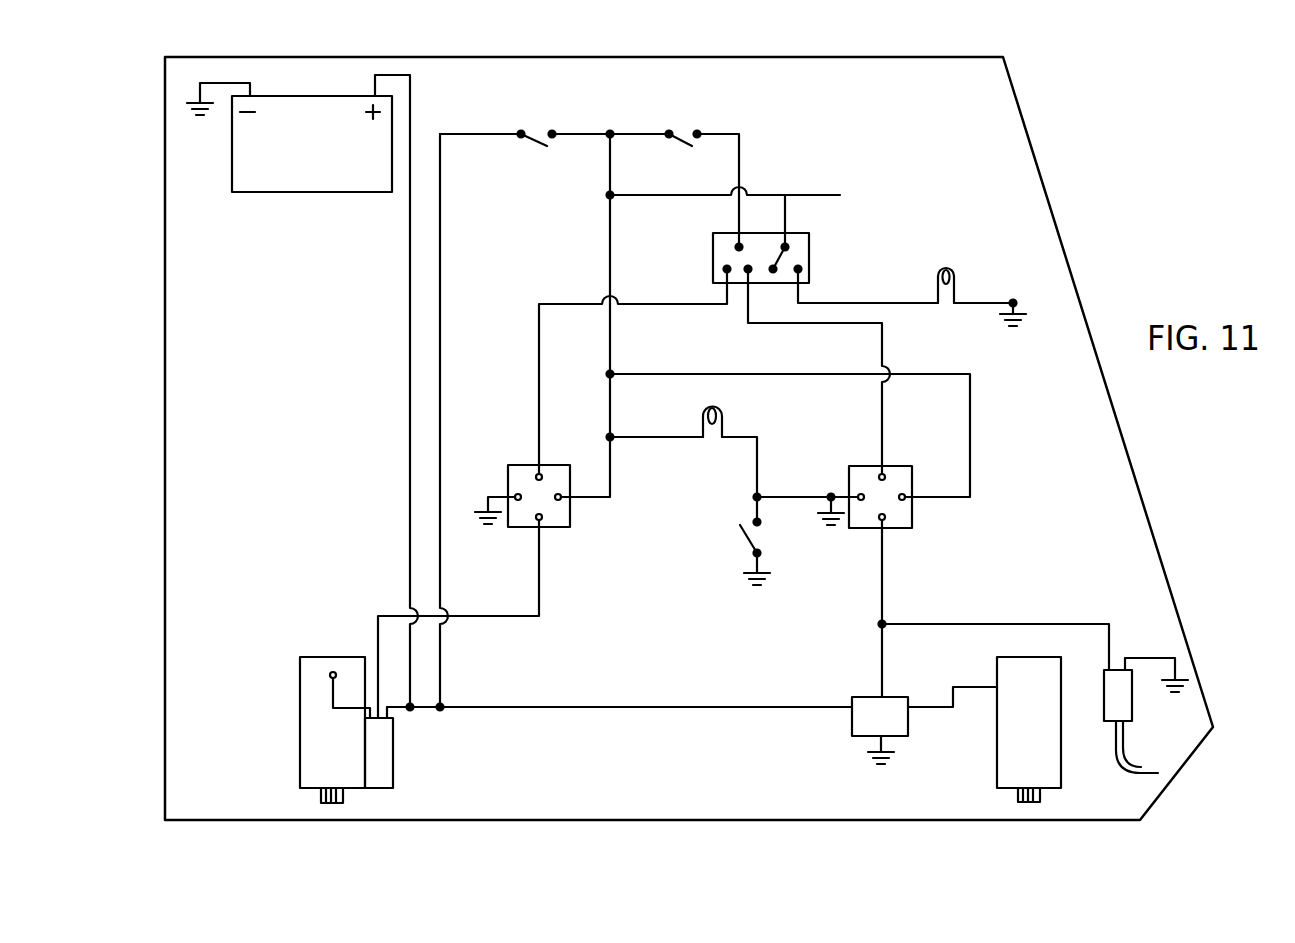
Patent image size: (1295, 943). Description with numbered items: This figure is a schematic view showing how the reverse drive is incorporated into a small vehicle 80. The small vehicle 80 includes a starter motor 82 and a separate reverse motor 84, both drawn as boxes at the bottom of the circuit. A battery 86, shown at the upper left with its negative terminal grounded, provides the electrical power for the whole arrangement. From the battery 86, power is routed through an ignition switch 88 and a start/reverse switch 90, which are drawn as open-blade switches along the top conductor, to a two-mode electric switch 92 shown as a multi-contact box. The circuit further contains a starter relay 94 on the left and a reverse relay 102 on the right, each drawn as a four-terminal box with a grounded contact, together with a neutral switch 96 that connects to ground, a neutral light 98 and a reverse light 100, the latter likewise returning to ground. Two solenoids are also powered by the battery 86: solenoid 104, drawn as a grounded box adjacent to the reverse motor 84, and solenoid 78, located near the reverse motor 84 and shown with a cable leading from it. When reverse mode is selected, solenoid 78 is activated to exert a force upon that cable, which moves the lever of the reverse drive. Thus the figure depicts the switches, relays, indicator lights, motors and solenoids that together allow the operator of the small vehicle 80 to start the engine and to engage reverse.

The solenoid 78 is at (1128, 705).
The small vehicle 80 is at (1063, 247).
The starter motor 82 is at (300, 745).
The reverse motor 84 is at (1005, 763).
The battery 86 is at (293, 182).
The ignition switch 88 is at (533, 130).
The start/reverse switch 90 is at (681, 130).
The two-mode electric switch 92 is at (809, 256).
The starter relay 94 is at (570, 510).
The neutral switch 96 is at (758, 537).
The neutral light 98 is at (722, 418).
The reverse light 100 is at (945, 268).
The reverse relay 102 is at (912, 515).
The solenoid 104 is at (858, 723).